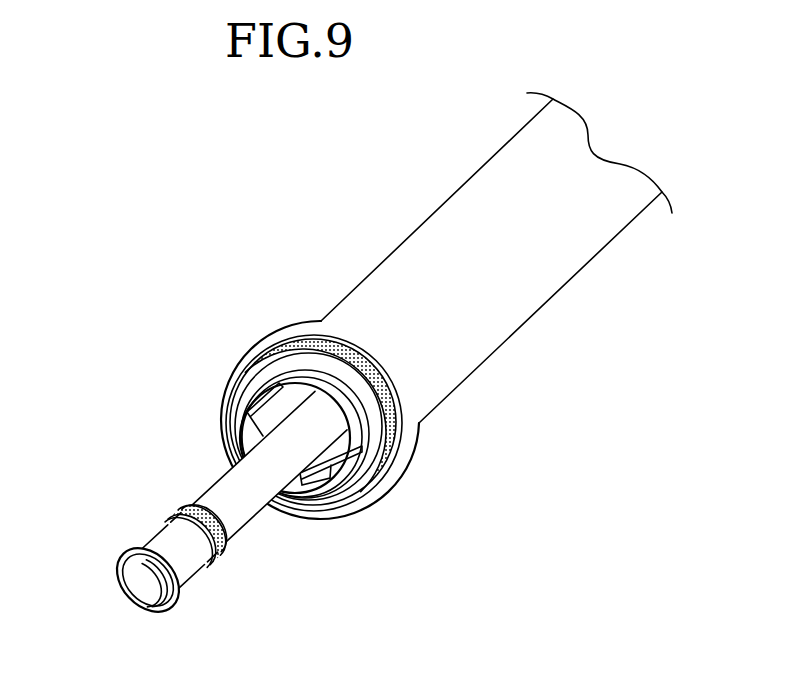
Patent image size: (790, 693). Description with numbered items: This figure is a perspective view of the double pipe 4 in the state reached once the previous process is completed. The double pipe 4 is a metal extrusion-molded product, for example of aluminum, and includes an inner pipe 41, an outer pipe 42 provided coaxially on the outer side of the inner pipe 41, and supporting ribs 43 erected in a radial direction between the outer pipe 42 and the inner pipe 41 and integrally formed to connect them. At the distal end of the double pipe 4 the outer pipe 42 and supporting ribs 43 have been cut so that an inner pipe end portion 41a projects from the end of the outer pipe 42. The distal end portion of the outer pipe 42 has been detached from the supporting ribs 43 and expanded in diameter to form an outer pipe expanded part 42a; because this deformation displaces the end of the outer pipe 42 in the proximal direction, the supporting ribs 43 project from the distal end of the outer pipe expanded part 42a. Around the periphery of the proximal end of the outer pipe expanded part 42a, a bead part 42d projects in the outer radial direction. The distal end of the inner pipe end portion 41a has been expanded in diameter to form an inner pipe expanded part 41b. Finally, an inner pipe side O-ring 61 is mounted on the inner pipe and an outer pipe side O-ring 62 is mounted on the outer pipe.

The double pipe 4 is at (453, 191).
The outer pipe 42 is at (540, 275).
The outer pipe expanded part 42a is at (228, 383).
The bead part 42d is at (277, 330).
The outer pipe side O-ring 62 is at (280, 408).
The supporting rib 43 is at (340, 462).
The inner pipe 41 is at (203, 491).
The inner pipe end portion 41a is at (247, 517).
The inner pipe expanded part 41b is at (192, 587).
The inner pipe side O-ring 61 is at (213, 568).